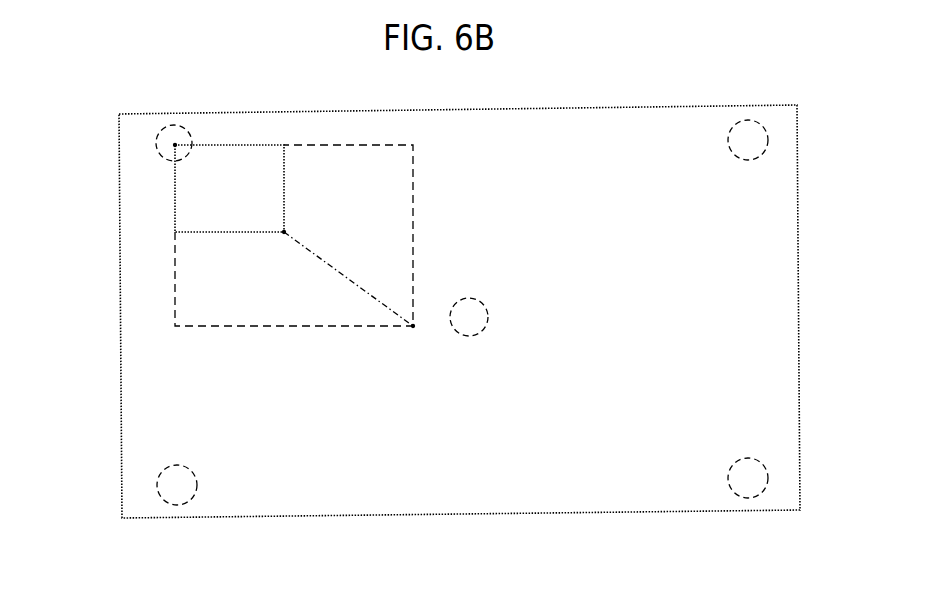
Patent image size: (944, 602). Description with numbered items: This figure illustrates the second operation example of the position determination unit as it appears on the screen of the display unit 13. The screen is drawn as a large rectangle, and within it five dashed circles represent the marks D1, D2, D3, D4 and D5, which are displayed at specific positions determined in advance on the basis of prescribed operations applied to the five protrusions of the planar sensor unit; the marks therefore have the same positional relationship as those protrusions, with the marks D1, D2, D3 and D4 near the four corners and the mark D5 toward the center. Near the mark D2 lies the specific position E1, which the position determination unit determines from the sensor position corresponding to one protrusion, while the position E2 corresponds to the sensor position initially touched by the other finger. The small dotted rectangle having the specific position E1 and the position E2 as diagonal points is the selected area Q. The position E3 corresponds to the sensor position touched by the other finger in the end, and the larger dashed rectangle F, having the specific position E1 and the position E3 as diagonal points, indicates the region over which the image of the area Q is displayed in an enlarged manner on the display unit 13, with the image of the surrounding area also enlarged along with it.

The display unit 13 is at (338, 530).
The area Q is at (229, 188).
The imaging field F is at (285, 187).
The specific position E1 is at (175, 145).
The position E2 is at (284, 232).
The position E3 is at (413, 326).
The mark D1 is at (165, 468).
The mark D2 is at (157, 130).
The mark D3 is at (748, 158).
The mark D4 is at (750, 496).
The mark D5 is at (470, 336).